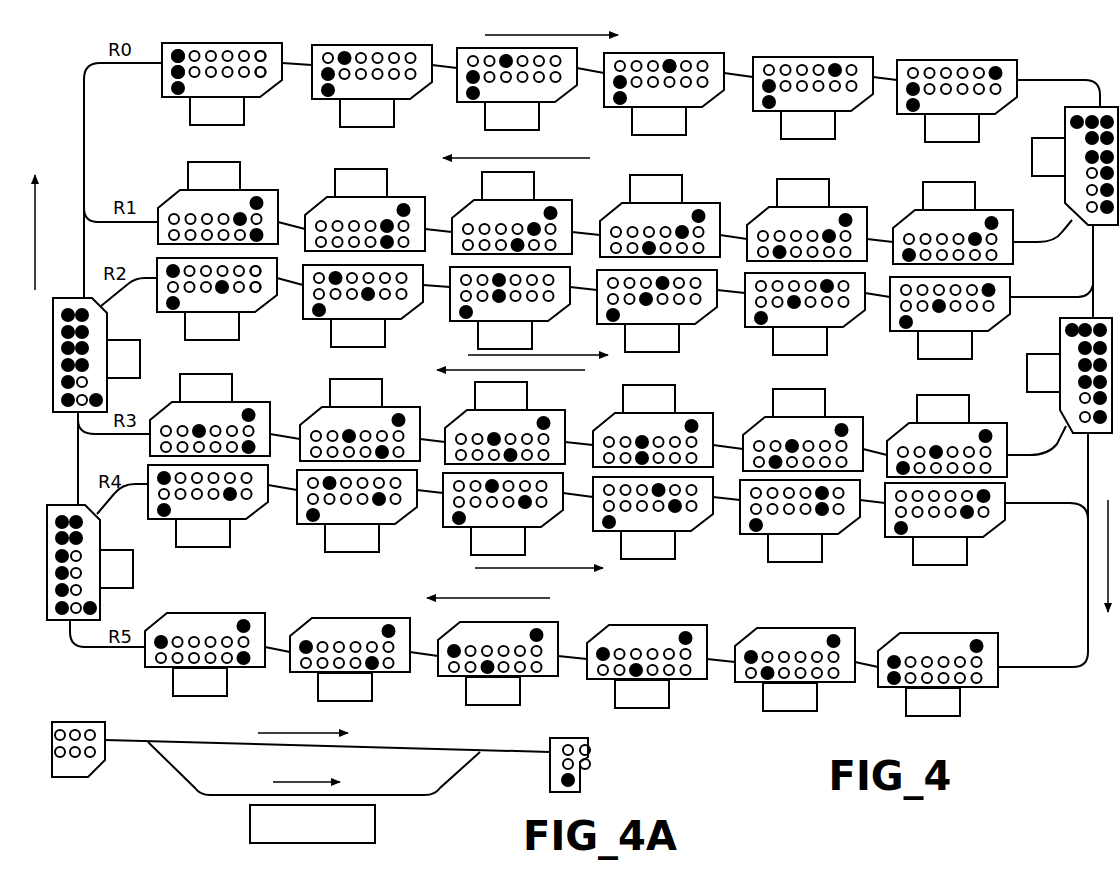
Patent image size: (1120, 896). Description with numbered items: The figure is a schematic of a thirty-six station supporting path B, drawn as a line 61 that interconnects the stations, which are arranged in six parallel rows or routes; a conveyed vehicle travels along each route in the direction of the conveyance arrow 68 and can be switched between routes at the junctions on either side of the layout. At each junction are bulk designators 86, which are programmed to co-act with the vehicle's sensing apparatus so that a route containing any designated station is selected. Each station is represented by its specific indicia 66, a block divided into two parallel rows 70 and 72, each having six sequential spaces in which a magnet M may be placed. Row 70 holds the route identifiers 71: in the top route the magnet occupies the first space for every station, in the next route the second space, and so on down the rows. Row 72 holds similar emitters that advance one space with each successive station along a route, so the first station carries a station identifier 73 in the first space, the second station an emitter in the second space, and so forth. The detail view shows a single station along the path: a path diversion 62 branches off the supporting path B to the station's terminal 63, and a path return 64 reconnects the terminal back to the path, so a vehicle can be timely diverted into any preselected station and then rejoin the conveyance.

In FIG. 4, the line 61 is at (88, 150).
In FIG. 4A, the path diversion 62 is at (178, 778).
In FIG. 4A, the terminal 63 is at (377, 825).
In FIG. 4A, the path return 64 is at (455, 778).
In FIG. 4, the specific indicia 66 is at (177, 97).
In FIG. 4A, the specific indicia 66 is at (78, 778).
In FIG. 4, the conveyance arrow 68 is at (482, 35).
In FIG. 4A, the conveyance arrow 68 is at (305, 733).
In FIG. 4, the row 70 is at (266, 78).
In FIG. 4, the route identifiers 71 is at (174, 72).
In FIG. 4, the row 72 is at (264, 52).
In FIG. 4, the station identifier 73 is at (176, 54).
In FIG. 4, the bulk designators 86 is at (1064, 130).
In FIG. 4, the magnet M is at (672, 62).
In FIG. 4A, the supporting path B is at (404, 746).